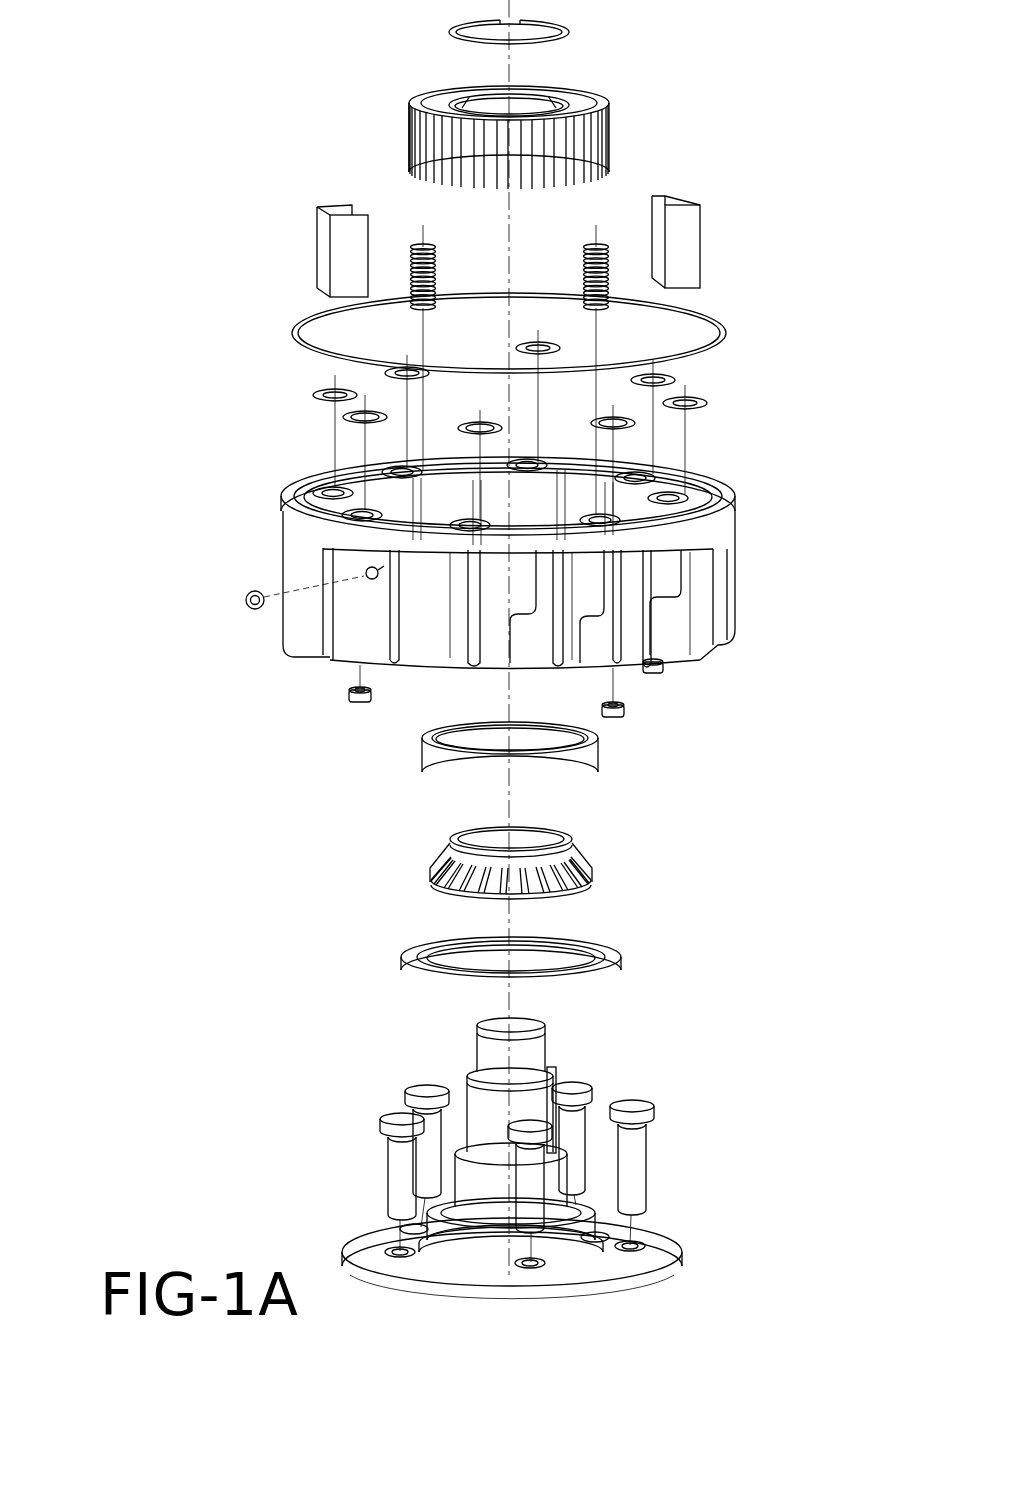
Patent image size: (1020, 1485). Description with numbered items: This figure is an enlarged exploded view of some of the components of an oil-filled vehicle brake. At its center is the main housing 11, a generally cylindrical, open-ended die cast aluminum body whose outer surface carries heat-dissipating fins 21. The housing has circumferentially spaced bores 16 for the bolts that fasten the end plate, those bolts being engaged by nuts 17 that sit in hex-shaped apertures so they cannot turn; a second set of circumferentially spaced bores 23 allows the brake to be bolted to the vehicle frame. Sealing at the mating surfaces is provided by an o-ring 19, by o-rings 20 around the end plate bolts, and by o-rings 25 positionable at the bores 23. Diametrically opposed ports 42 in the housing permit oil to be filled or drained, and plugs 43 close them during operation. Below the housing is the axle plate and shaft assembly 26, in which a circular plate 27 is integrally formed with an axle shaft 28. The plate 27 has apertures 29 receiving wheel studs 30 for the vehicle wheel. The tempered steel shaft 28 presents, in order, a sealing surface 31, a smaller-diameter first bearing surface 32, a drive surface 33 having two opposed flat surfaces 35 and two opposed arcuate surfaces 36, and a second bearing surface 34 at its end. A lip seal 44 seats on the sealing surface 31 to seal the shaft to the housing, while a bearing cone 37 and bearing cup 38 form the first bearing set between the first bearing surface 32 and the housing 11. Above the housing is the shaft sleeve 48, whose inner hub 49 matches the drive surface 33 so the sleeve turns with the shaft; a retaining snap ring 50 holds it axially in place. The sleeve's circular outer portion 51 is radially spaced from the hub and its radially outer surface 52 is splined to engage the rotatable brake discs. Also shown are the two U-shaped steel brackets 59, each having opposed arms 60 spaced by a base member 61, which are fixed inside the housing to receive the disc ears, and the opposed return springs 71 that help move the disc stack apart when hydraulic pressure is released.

The main housing 11 is at (504, 578).
The circumferentially spaced bores 16 is at (480, 537).
The nuts 17 is at (352, 703).
The o-ring 19 is at (722, 328).
The o-rings 20 is at (395, 380).
The fins 21 is at (340, 563).
The circumferentially spaced bores 23 is at (395, 470).
The o-rings 25 is at (478, 420).
The axle plate and shaft assembly 26 is at (519, 1169).
The circular plate 27 is at (355, 1245).
The axle shaft 28 is at (470, 1045).
The apertures 29 is at (645, 1248).
The wheel studs 30 is at (425, 1150).
The sealing surface 31 is at (570, 1230).
The first bearing surface 32 is at (480, 1190).
The drive surface 33 is at (462, 1082).
The second bearing surface 34 is at (520, 1045).
The flat surfaces 35 is at (550, 1103).
The arcuate surfaces 36 is at (490, 1122).
The bearing cone 37 is at (580, 865).
The bearing cup 38 is at (465, 770).
The ports 42 is at (370, 580).
The plugs 43 is at (248, 606).
The lip seal 44 is at (605, 968).
The shaft sleeve 48 is at (516, 127).
The inner hub 49 is at (535, 108).
The retaining snap ring 50 is at (560, 36).
The circular outer portion 51 is at (440, 108).
The radially outer surface 52 is at (428, 145).
The brackets 59 is at (510, 229).
The arms 60 is at (342, 205).
The base member 61 is at (318, 215).
The return springs 71 is at (438, 280).